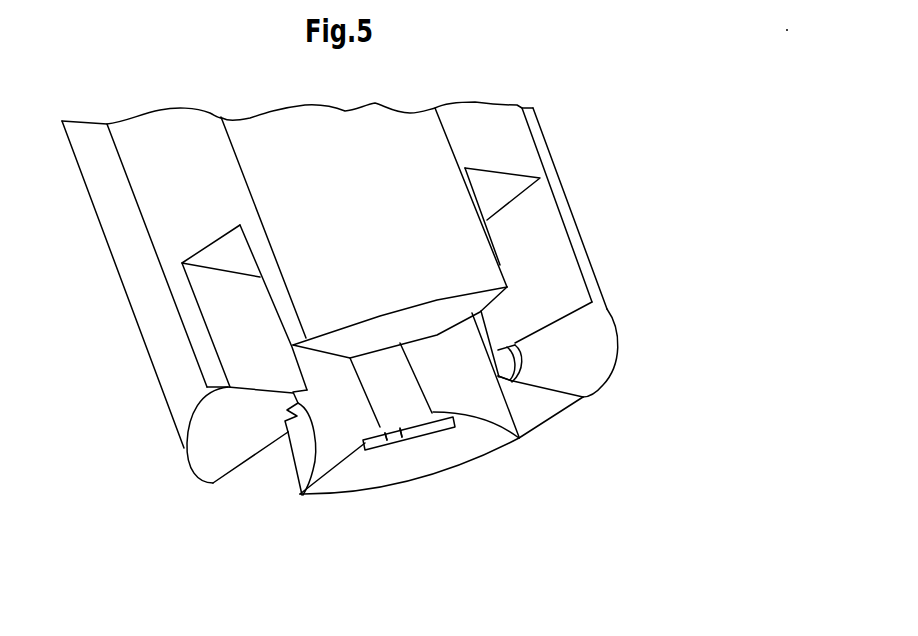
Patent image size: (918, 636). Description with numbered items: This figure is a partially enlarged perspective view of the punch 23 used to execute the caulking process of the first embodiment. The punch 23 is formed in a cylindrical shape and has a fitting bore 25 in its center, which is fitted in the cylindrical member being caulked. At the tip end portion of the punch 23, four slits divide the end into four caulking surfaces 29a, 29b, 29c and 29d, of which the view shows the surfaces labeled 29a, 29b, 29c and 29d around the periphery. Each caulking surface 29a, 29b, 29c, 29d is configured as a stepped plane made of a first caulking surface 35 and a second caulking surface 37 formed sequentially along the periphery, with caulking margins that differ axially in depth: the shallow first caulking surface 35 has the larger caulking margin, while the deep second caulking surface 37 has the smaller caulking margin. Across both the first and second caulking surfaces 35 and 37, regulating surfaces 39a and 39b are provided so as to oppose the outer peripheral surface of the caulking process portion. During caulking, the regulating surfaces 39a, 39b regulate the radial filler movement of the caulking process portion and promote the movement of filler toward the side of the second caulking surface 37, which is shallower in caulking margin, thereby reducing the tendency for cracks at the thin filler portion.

The punch 23 is at (557, 152).
The fitting bore 25 is at (403, 380).
The caulking surface 29a is at (528, 365).
The caulking surface 29b is at (407, 437).
The caulking surface 29c is at (278, 422).
The caulking surface 29d is at (403, 356).
The first caulking surface 35 is at (302, 498).
The second caulking surface 37 is at (498, 347).
The regulating surface 39a is at (583, 396).
The regulating surface 39b is at (387, 442).